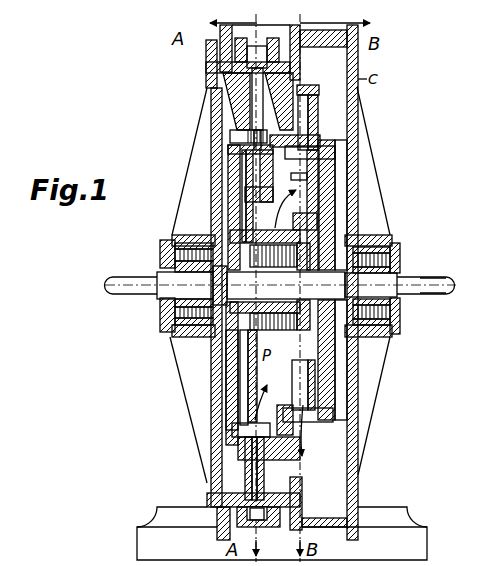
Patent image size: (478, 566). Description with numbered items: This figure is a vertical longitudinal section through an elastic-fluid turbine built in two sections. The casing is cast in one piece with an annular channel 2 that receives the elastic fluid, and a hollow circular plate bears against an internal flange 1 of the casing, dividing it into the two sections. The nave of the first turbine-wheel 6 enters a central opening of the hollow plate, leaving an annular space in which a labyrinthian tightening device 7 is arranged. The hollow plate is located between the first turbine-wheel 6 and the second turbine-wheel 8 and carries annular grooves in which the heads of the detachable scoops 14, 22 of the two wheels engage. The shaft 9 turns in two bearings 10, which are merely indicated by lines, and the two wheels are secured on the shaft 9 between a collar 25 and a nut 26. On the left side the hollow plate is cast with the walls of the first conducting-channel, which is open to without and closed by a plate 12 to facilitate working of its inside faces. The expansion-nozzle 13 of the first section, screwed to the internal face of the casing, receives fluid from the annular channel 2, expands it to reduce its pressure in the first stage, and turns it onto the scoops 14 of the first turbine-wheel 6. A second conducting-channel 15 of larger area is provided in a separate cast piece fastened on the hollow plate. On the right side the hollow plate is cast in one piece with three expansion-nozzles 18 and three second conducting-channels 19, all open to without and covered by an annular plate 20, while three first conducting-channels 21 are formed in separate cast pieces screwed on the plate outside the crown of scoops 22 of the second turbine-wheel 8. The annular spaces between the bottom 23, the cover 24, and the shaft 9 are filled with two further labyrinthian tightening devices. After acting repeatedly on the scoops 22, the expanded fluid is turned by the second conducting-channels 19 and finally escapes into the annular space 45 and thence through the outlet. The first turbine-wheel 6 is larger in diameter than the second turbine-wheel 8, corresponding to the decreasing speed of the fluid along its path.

The internal flange 1 is at (301, 503).
The annular channel 2 is at (262, 48).
The first turbine-wheel 6 is at (233, 366).
The labyrinthian tightening device 7 is at (240, 344).
The second turbine-wheel 8 is at (322, 358).
The shaft 9 is at (432, 290).
The bearings 10 is at (281, 277).
The plate 12 is at (242, 166).
The expansion-nozzle 13 is at (210, 89).
The scoops 14 is at (252, 435).
The second conducting-channel 15 is at (248, 465).
The expansion-nozzles 18 is at (307, 177).
The second conducting-channels 19 is at (318, 401).
The annular plate 20 is at (318, 380).
The first conducting-channels 21 is at (313, 96).
The scoops 22 is at (314, 430).
The bottom 23 is at (353, 206).
The cover 24 is at (213, 191).
The collar 25 is at (371, 285).
The nut 26 is at (213, 336).
The annular space 45 is at (323, 47).